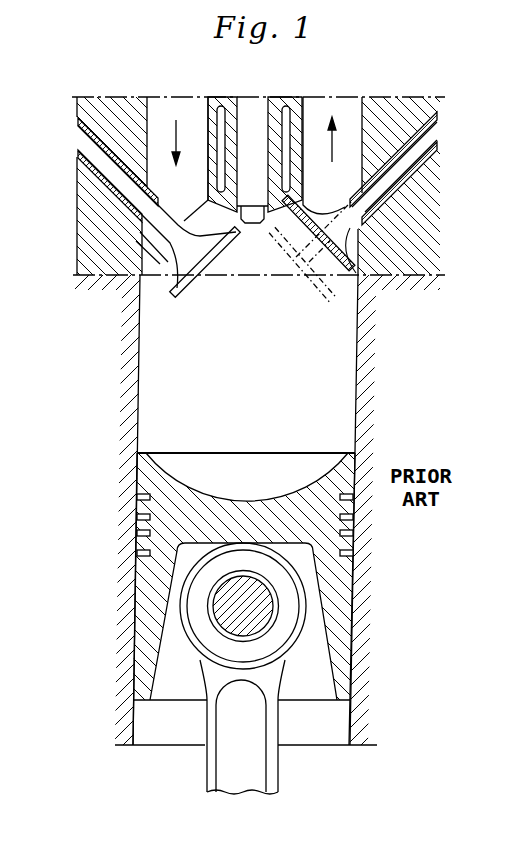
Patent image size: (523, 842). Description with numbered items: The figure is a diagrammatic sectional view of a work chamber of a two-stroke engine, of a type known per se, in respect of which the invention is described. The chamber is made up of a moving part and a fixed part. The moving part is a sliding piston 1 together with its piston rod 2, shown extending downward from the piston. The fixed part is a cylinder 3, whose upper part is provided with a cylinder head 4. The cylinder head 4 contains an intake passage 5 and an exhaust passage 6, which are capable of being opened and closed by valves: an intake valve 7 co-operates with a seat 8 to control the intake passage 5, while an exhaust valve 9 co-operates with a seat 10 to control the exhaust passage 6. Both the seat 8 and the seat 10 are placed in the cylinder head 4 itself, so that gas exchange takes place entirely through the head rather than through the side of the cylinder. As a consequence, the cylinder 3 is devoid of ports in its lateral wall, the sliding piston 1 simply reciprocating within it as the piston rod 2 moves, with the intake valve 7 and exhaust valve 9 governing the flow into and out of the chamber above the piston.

The sliding piston 1 is at (337, 620).
The piston rod 2 is at (225, 772).
The cylinder 3 is at (356, 400).
The cylinder head 4 is at (404, 281).
The intake passage 5 is at (170, 104).
The exhaust passage 6 is at (346, 103).
The intake valve 7 is at (188, 300).
The seat 8 is at (148, 247).
The exhaust valve 9 is at (313, 282).
The seat 10 is at (360, 257).